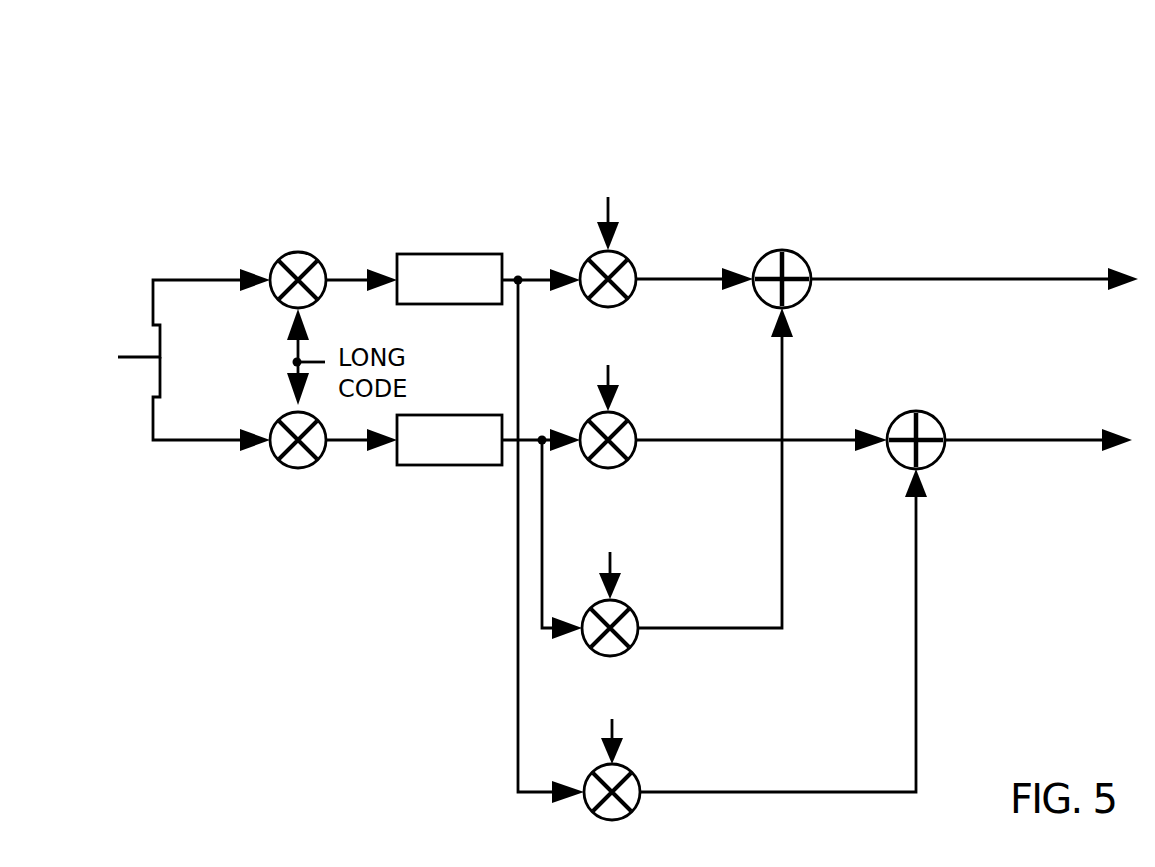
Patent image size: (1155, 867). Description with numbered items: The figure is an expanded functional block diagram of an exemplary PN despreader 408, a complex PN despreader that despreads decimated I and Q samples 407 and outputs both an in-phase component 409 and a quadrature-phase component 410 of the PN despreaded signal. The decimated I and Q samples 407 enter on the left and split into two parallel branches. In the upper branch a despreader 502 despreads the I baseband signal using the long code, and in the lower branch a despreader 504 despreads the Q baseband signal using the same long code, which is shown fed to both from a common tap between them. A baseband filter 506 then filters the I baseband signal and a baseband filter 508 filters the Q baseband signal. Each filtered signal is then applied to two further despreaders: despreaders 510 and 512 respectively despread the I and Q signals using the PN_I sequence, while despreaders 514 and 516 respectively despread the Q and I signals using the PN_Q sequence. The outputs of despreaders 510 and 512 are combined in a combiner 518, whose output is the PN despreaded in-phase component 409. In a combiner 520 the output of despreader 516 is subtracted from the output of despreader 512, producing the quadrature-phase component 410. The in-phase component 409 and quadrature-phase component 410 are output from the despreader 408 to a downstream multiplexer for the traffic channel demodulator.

The decimated I & Q samples 407 is at (130, 357).
The PN despreader 408 is at (1030, 117).
The in-phase (I) component 409 is at (1065, 272).
The quadrature-phase (Q) component 410 is at (1078, 435).
The despreader 502 is at (298, 252).
The despreader 504 is at (298, 468).
The baseband filter (BBF) 506 is at (432, 254).
The baseband filter (BBF) 508 is at (420, 465).
The despreader 510 is at (623, 252).
The despreader 512 is at (620, 413).
The despreader 514 is at (618, 601).
The despreader 516 is at (624, 766).
The combiner 518 is at (784, 250).
The combiner 520 is at (917, 411).